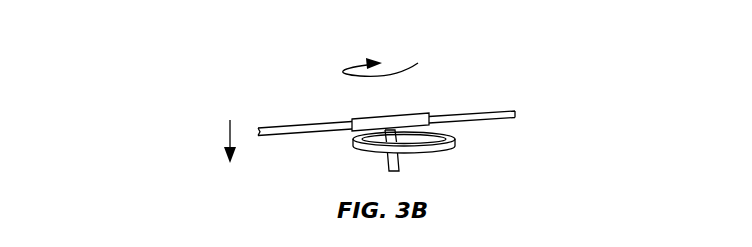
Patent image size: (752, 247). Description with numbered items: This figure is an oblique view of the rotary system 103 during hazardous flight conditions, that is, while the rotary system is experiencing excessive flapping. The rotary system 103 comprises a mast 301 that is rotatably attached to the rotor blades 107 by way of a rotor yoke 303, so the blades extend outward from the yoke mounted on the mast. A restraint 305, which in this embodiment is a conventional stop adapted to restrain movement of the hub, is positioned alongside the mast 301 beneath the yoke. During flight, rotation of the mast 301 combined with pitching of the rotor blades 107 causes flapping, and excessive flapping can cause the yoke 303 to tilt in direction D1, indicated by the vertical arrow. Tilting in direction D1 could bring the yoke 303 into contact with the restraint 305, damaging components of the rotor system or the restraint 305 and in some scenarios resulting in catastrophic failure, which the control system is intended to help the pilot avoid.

The rotary system 103 is at (173, 59).
The rotor blades 107 is at (478, 110).
The mast 301 is at (400, 163).
The rotor yoke 303 is at (373, 117).
The restraint 305 is at (454, 140).
The direction D1 is at (229, 133).